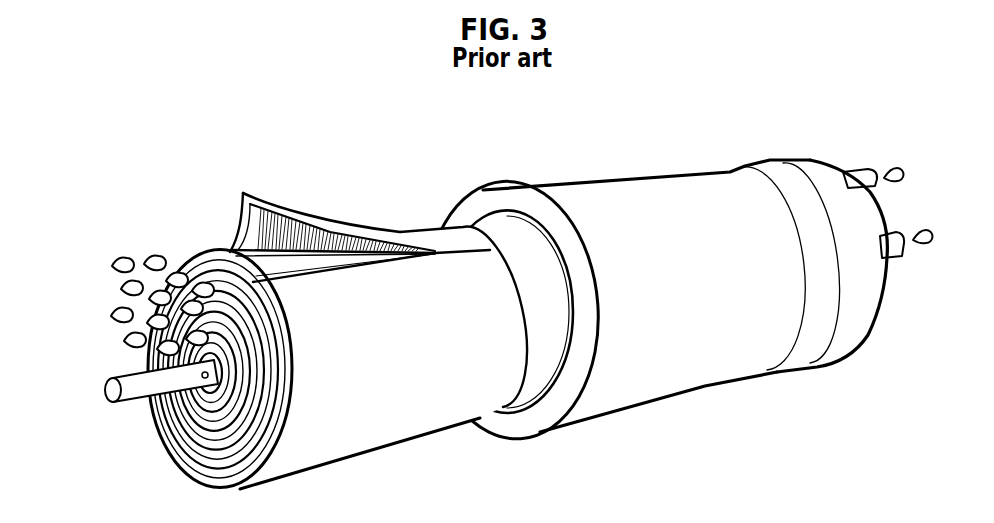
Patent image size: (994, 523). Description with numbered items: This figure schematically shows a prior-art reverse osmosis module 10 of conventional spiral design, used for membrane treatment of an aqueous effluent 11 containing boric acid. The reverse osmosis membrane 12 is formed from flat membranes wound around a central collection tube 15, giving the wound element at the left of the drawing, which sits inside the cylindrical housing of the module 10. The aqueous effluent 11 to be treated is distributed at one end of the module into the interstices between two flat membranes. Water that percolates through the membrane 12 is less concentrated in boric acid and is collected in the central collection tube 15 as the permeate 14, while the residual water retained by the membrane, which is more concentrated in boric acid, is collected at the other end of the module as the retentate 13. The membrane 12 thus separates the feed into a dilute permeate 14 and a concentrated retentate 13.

The reverse osmosis module 10 is at (707, 343).
The aqueous effluent 11 is at (102, 245).
The reverse osmosis membrane 12 is at (403, 394).
The retentate 13 is at (912, 170).
The permeate 14 is at (931, 249).
The collection tube 15 is at (167, 383).